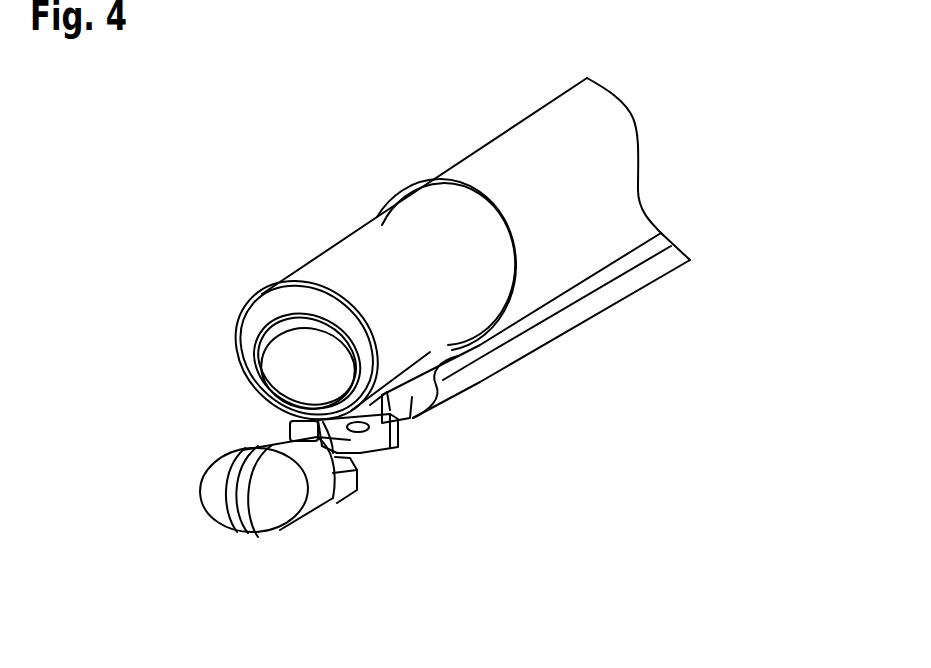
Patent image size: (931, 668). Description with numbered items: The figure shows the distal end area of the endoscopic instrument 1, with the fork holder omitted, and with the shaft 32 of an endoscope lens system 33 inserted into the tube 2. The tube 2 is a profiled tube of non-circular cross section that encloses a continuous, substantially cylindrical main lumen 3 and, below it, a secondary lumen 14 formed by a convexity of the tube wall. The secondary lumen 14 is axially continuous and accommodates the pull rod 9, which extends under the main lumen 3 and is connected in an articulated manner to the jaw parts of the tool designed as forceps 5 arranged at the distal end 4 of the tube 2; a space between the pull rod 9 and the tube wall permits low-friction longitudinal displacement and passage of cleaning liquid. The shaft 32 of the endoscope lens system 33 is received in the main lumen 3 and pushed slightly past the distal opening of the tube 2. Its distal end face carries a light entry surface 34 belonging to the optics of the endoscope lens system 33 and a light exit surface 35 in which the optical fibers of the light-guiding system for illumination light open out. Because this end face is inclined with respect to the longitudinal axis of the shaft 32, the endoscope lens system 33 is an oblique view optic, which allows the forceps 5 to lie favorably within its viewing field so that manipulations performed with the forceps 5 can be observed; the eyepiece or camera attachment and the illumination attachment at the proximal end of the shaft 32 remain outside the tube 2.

The endoscopic instrument 1 is at (693, 466).
The tube 2 is at (538, 127).
The main lumen 3 is at (470, 349).
The distal end 4 is at (270, 264).
The forceps 5 is at (168, 454).
The pull rod 9 is at (410, 420).
The secondary lumen 14 is at (440, 410).
The shaft 32 is at (352, 258).
The endoscope lens system 33 is at (270, 307).
The light entry surface 34 is at (283, 368).
The light exit surface 35 is at (275, 303).